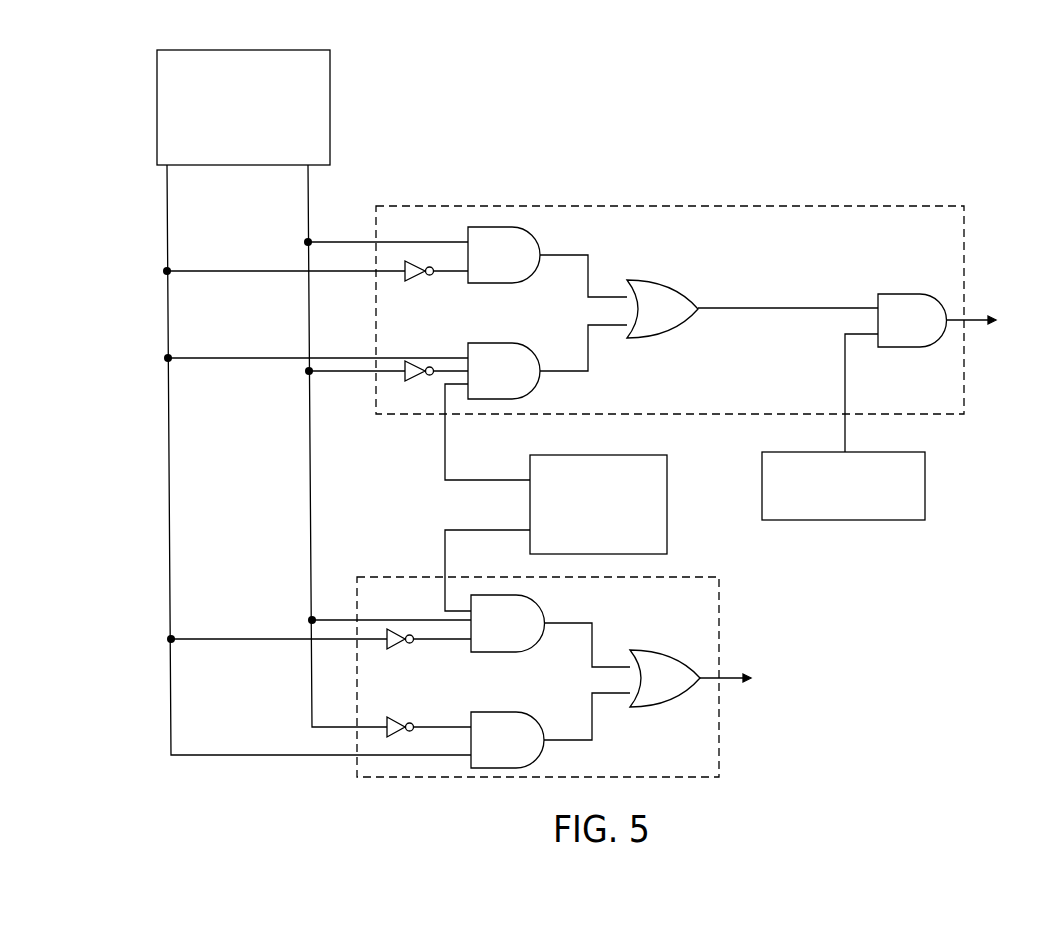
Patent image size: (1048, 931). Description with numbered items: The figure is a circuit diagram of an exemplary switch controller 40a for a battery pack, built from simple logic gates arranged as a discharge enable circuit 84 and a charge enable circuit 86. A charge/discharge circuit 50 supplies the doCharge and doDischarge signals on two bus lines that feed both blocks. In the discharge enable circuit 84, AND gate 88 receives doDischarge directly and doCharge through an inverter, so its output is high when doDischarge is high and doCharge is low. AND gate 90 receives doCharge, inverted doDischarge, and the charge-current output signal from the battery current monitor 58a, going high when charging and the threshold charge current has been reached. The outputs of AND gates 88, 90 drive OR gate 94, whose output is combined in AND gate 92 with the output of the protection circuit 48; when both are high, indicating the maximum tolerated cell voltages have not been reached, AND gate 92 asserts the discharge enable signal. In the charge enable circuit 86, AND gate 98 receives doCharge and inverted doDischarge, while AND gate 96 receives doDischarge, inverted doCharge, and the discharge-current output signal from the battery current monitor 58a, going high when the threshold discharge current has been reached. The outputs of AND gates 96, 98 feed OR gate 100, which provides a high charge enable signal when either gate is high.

The switch controller 40a is at (694, 146).
The charge/discharge circuit 50 is at (330, 82).
The discharge enable circuit 84 is at (884, 205).
The AND gate 88 is at (520, 283).
The AND gate 90 is at (488, 343).
The OR gate 94 is at (678, 291).
The AND gate 92 is at (892, 294).
The battery current monitor 58a is at (667, 500).
The protection circuit 48 is at (925, 492).
The charge enable circuit 86 is at (724, 598).
The AND gate 96 is at (530, 652).
The AND gate 98 is at (485, 712).
The OR gate 100 is at (655, 650).